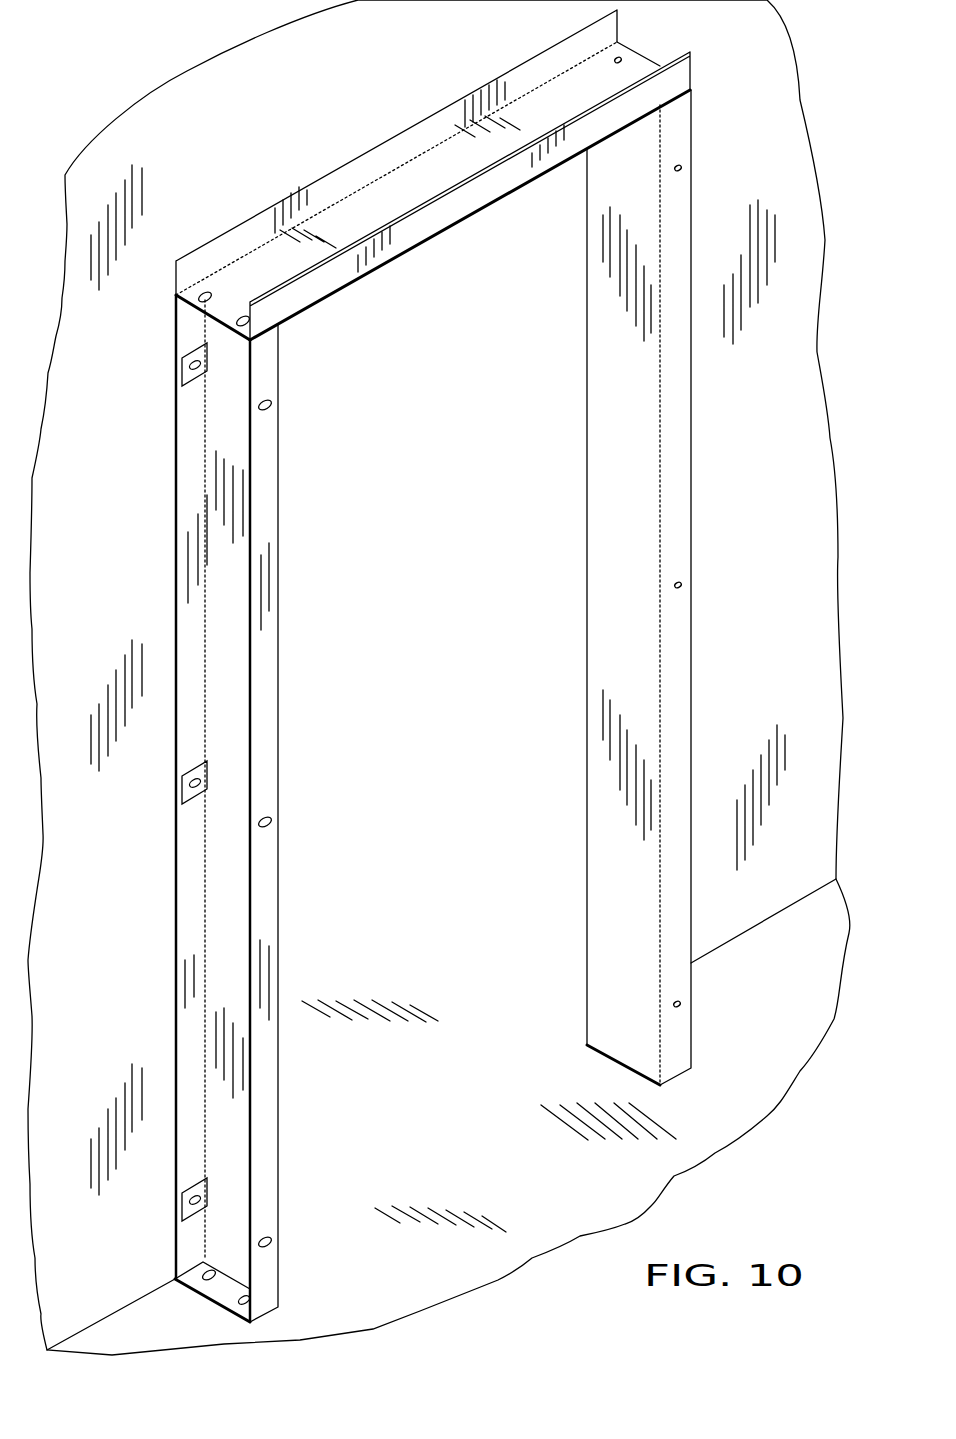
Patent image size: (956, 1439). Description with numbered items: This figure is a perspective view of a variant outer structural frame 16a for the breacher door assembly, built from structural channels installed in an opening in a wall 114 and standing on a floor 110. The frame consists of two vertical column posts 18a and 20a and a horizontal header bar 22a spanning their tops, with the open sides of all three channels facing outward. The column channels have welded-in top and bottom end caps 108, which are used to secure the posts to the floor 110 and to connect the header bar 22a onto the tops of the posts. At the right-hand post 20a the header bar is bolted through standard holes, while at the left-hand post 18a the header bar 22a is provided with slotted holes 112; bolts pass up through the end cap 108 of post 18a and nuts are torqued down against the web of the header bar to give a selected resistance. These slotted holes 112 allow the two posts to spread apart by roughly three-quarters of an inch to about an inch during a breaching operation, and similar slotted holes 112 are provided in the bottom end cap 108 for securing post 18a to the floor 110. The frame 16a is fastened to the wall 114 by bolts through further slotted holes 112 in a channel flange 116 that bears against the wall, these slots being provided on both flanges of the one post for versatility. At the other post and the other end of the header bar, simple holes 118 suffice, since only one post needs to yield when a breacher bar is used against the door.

The outer structural frame 16a is at (433, 173).
The post 18a is at (179, 808).
The post 20a is at (694, 674).
The header bar 22a is at (373, 147).
The end cap 108 is at (224, 328).
The floor 110 is at (544, 1180).
The slotted holes 112 is at (243, 318).
The wall 114 is at (809, 445).
The channel flange 116 is at (185, 529).
The holes 118 is at (621, 58).